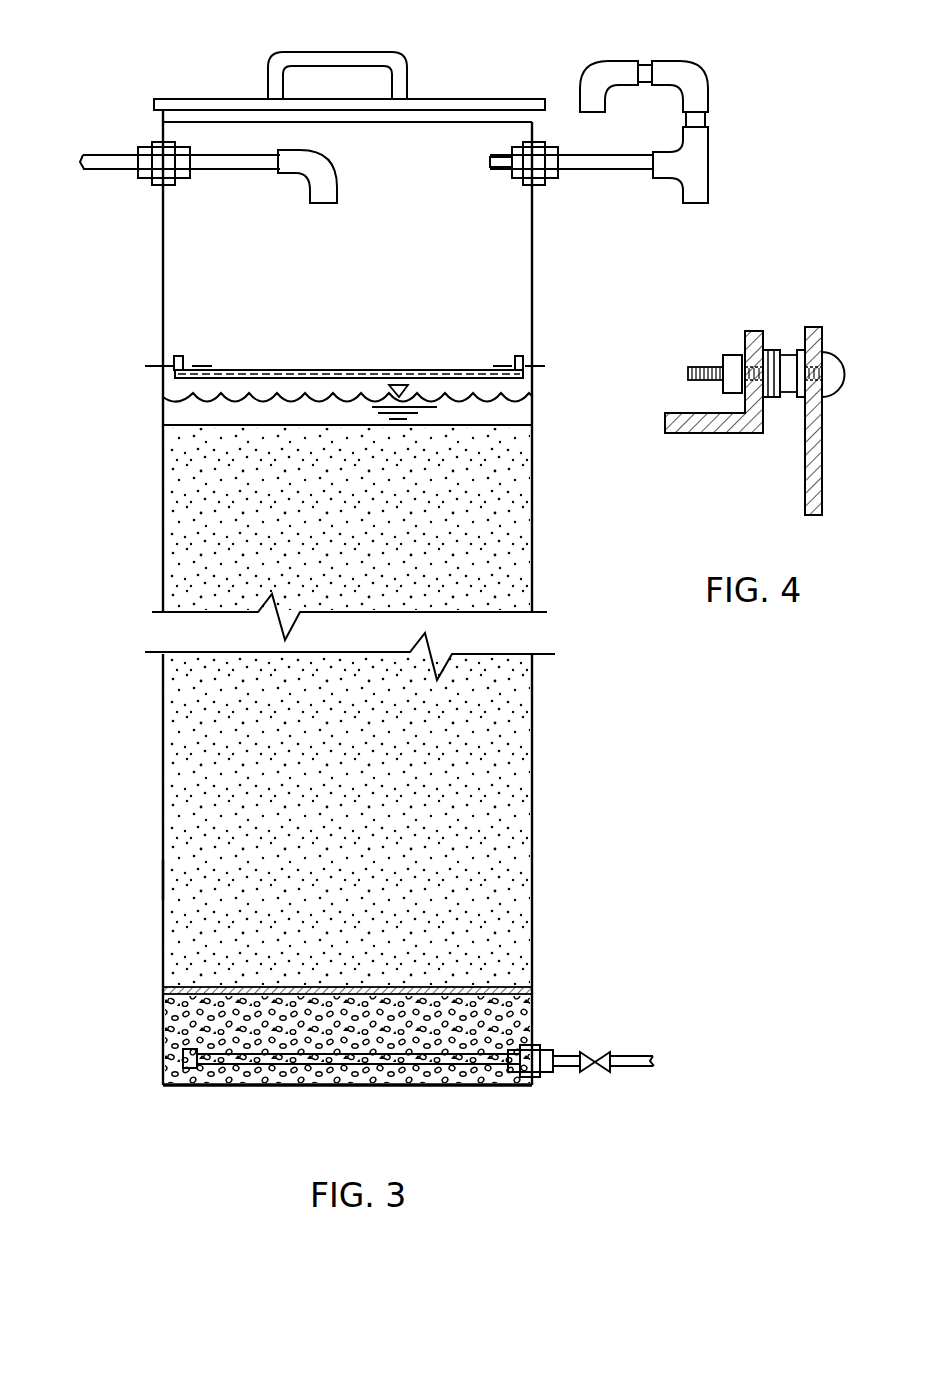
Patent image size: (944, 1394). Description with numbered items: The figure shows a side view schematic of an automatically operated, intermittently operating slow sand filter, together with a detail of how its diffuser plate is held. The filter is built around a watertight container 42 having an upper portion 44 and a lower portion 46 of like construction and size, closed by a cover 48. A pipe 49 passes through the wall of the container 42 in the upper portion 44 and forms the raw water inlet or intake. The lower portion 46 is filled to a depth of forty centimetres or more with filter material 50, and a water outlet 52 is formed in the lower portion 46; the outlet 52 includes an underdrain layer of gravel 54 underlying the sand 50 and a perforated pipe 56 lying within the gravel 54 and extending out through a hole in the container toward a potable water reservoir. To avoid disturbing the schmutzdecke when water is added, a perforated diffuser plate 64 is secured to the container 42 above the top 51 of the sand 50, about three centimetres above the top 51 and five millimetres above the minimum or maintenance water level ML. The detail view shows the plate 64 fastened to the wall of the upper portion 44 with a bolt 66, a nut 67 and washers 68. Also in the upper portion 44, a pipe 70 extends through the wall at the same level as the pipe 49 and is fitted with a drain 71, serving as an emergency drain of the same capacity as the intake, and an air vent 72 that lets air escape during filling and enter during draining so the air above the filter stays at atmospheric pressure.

In FIG. 3, the watertight container 42 is at (312, 597).
In FIG. 3, the upper portion 44 is at (160, 331).
In FIG. 4, the upper portion 44 is at (822, 455).
In FIG. 3, the lower portion 46 is at (162, 885).
In FIG. 3, the cover 48 is at (440, 99).
In FIG. 3, the pipe 49 is at (113, 155).
In FIG. 3, the filter material 50 is at (225, 806).
In FIG. 3, the top 51 is at (160, 425).
In FIG. 3, the water outlet 52 is at (487, 1086).
In FIG. 3, the gravel 54 is at (172, 1010).
In FIG. 3, the perforated pipe 56 is at (195, 1068).
In FIG. 3, the diffuser plate 64 is at (430, 372).
In FIG. 4, the diffuser plate 64 is at (733, 434).
In FIG. 4, the bolt 66 is at (705, 366).
In FIG. 4, the nut 67 is at (723, 388).
In FIG. 4, the washers 68 is at (771, 350).
In FIG. 3, the pipe 70 is at (598, 172).
In FIG. 3, the drain 71 is at (708, 172).
In FIG. 3, the air vent 72 is at (693, 62).
In FIG. 3, the minimum water level ML is at (495, 398).